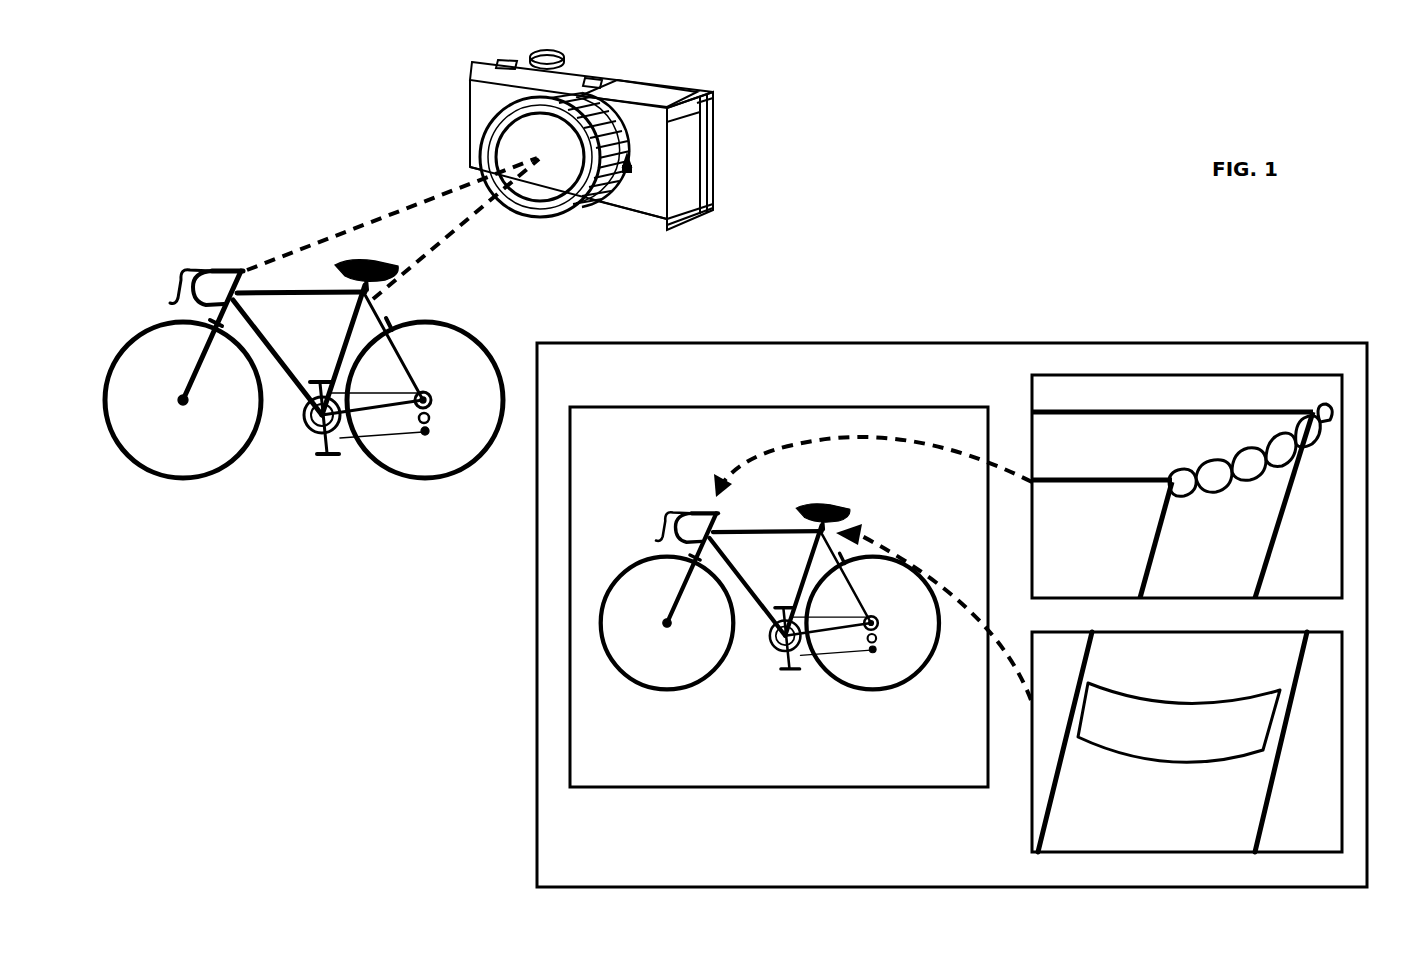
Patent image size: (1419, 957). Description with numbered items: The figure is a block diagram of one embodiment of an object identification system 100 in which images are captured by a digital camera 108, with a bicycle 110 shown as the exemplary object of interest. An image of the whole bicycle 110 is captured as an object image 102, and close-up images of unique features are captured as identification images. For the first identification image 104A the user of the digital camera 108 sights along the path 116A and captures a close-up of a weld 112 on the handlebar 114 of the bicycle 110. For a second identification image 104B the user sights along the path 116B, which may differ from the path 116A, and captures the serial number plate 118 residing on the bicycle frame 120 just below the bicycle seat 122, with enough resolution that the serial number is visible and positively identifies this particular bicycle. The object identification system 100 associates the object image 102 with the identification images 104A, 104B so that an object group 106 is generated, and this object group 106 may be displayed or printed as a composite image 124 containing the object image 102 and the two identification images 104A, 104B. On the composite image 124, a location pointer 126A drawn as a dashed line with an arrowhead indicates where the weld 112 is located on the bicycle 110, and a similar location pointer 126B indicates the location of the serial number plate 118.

The object identification system 100 is at (1006, 185).
The object image 102 is at (967, 775).
The ID image 104A is at (1187, 486).
The ID image 104B is at (1187, 742).
The object group 106 is at (967, 566).
The digital camera 108 is at (665, 228).
The bicycle 110 is at (718, 532).
The weld 112 is at (238, 268).
The handlebar 114 is at (1082, 477).
The path 116A is at (412, 205).
The path 116B is at (447, 242).
The serial number plate 118 is at (1160, 703).
The bicycle frame 120 is at (347, 310).
The bicycle seat 122 is at (348, 265).
The composite image 124 is at (1397, 872).
The location pointer 126A is at (772, 447).
The location pointer 126B is at (885, 538).